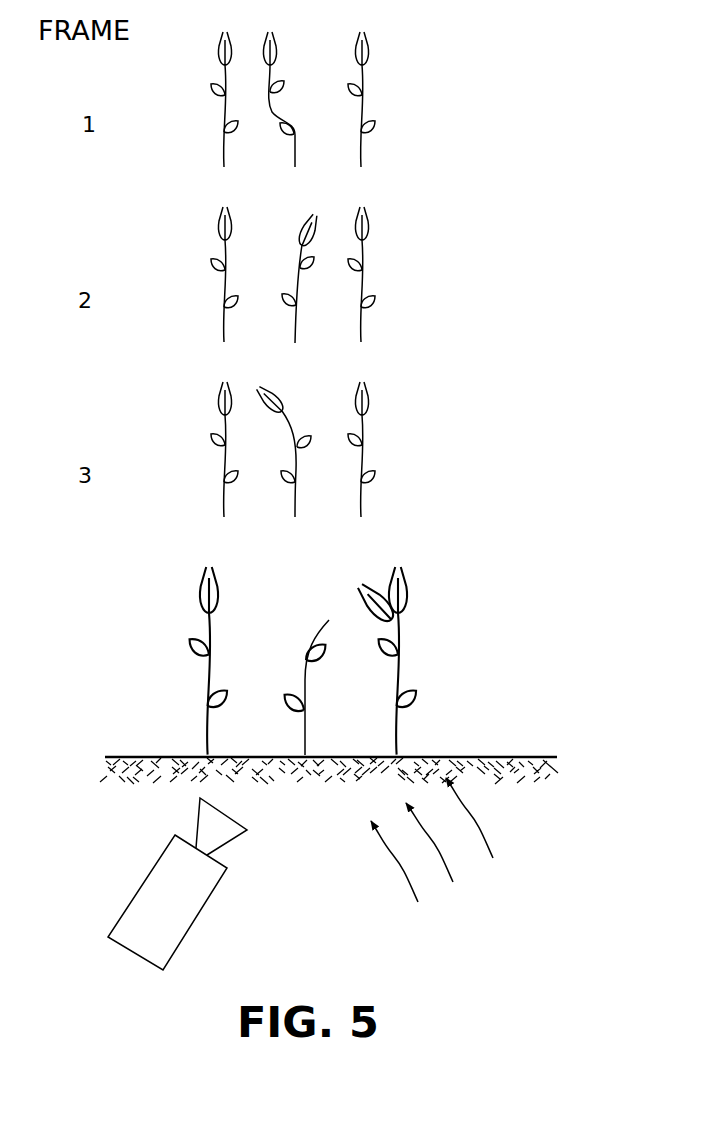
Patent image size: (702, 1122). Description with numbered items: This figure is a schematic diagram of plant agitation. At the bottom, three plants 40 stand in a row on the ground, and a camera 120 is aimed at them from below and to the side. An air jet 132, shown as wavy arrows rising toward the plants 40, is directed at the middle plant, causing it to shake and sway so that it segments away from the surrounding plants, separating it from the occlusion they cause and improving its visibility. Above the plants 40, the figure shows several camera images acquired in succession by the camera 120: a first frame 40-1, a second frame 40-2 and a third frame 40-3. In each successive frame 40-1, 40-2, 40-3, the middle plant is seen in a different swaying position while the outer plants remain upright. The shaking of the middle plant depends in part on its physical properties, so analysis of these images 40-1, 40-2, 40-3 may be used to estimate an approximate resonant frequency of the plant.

The camera image frame 40-1 is at (386, 96).
The camera image frame 40-2 is at (386, 272).
The camera image frame 40-3 is at (386, 447).
The plant 40 is at (420, 663).
The camera 120 is at (129, 882).
The air jet 132 is at (487, 822).